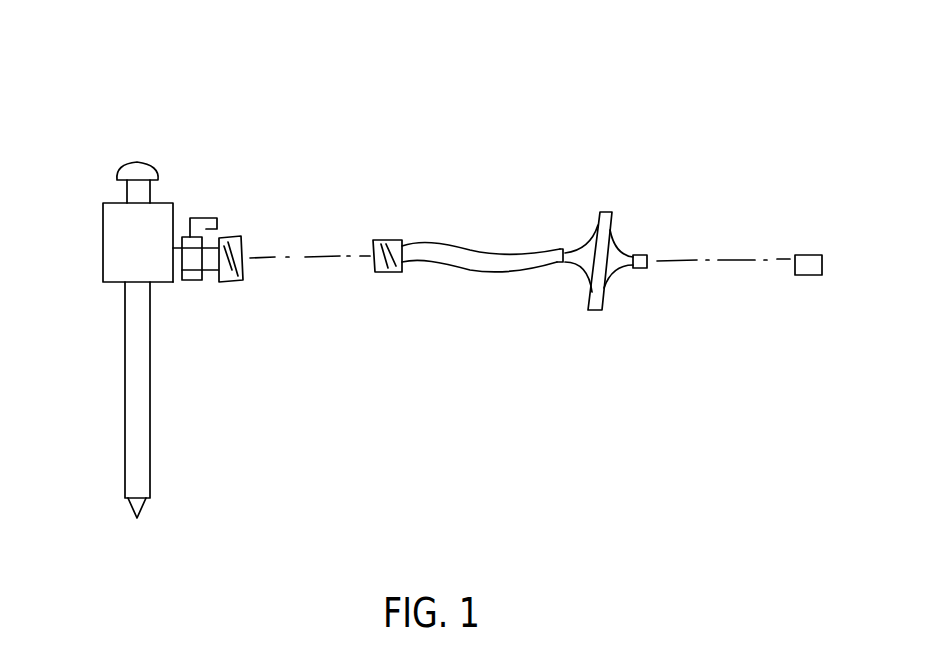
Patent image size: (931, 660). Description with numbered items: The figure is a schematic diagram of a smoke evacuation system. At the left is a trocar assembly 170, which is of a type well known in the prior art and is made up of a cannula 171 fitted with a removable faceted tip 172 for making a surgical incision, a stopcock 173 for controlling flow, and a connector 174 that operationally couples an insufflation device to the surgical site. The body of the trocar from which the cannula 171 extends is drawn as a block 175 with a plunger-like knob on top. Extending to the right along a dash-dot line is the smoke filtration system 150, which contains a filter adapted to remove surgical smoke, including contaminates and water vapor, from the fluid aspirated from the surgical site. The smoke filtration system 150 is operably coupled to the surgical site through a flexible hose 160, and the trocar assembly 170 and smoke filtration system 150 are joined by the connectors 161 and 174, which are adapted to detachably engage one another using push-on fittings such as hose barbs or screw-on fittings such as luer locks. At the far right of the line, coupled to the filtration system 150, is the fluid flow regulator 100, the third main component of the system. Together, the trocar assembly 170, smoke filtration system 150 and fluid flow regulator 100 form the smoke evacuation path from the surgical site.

The fluid flow regulator 100 is at (803, 255).
The smoke filtration system 150 is at (593, 312).
The flexible hose 160 is at (465, 256).
The connector 161 is at (387, 239).
The trocar assembly 170 is at (195, 150).
The cannula 171 is at (139, 402).
The removable faceted tip 172 is at (147, 505).
The stopcock 173 is at (203, 213).
The connector 174 is at (227, 283).
The syringe body 175 is at (117, 250).